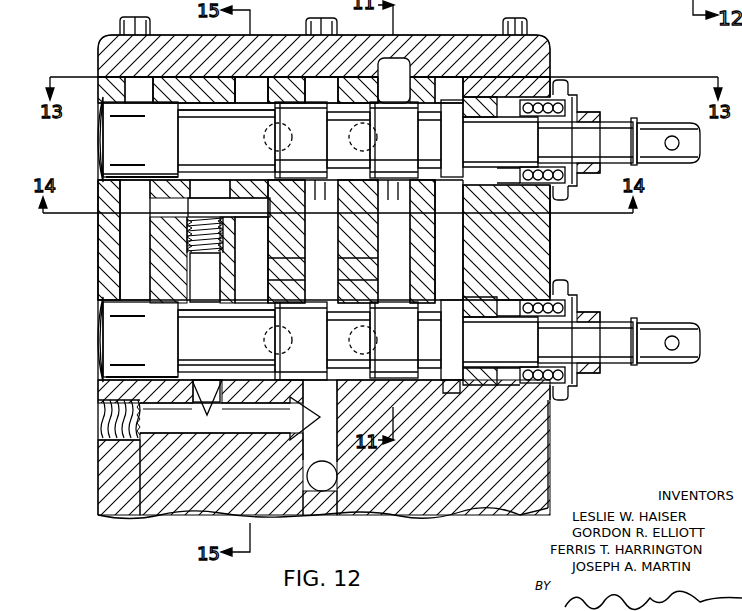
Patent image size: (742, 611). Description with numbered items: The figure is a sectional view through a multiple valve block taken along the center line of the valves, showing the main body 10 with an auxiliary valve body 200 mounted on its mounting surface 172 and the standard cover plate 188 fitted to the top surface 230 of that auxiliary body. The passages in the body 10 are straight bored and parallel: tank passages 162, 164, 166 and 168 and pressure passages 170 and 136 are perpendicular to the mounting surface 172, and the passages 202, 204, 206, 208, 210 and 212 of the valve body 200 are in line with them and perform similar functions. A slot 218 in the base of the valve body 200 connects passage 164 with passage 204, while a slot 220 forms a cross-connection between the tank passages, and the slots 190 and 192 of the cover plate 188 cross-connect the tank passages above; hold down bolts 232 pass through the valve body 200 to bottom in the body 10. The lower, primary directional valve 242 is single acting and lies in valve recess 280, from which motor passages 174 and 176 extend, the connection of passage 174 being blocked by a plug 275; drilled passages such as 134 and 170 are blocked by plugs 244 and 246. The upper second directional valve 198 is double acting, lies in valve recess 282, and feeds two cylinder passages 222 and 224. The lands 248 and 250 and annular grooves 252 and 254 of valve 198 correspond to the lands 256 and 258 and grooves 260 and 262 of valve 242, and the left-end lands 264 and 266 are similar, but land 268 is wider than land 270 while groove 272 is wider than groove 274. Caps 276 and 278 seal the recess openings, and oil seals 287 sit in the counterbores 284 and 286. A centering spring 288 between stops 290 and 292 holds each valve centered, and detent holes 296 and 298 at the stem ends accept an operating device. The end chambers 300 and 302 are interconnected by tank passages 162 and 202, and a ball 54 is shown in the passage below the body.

The body 10 is at (476, 437).
The ball check 54 is at (333, 484).
The intercommunicating passage 134 is at (230, 418).
The pressure passage 136 is at (330, 242).
The tank passage 162 is at (133, 264).
The tank passage 164 is at (254, 262).
The tank passage 166 is at (390, 258).
The tank passage 168 is at (466, 250).
The pressure passage 170 is at (202, 287).
The mounting surface 172 is at (500, 228).
The motor passage 174 is at (235, 316).
The motor passage 176 is at (416, 316).
The cover plate 188 is at (302, 74).
The slot 190 is at (242, 74).
The slot 192 is at (397, 60).
The second directional valve 198 is at (621, 133).
The auxiliary valve body 200 is at (547, 214).
The passage 202 is at (143, 86).
The passage 204 is at (220, 188).
The passage 206 is at (236, 89).
The passage 208 is at (288, 241).
The passage 210 is at (385, 63).
The passage 212 is at (458, 66).
The slot 218 is at (228, 249).
The slot 220 is at (330, 182).
The cylinder passage 222 is at (295, 140).
The cylinder passage 224 is at (383, 140).
The top surface 230 is at (240, 72).
The hold down bolt 232 is at (120, 26).
The primary directional valve 242 is at (615, 335).
The plug 244 is at (112, 425).
The plug 246 is at (128, 236).
The land 248 is at (372, 165).
The land 250 is at (530, 146).
The annular groove 252 is at (328, 102).
The annular groove 254 is at (462, 128).
The land 256 is at (417, 365).
The land 258 is at (452, 385).
The annular groove 260 is at (358, 269).
The annular groove 262 is at (433, 395).
The land 264 is at (230, 143).
The land 266 is at (226, 341).
The land 268 is at (275, 165).
The land 270 is at (295, 379).
The annular groove 272 is at (288, 269).
The annular groove 274 is at (232, 108).
The plug 275 is at (233, 360).
The cap 276 is at (95, 332).
The cap 278 is at (95, 132).
The valve recess 280 is at (370, 379).
The valve recess 282 is at (165, 176).
The counterbore 284 is at (510, 378).
The counterbore 286 is at (508, 178).
The oil seal 287 is at (506, 80).
The centering spring 288 is at (545, 103).
The stop 290 is at (540, 135).
The stop 292 is at (592, 173).
The detent hole 296 is at (671, 151).
The detent hole 298 is at (671, 351).
The end chamber 300 is at (140, 339).
The end chamber 302 is at (140, 139).